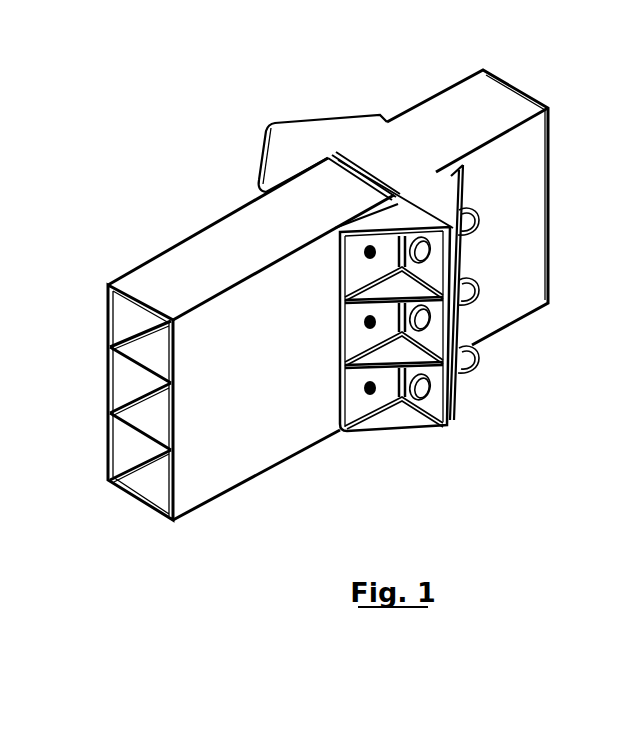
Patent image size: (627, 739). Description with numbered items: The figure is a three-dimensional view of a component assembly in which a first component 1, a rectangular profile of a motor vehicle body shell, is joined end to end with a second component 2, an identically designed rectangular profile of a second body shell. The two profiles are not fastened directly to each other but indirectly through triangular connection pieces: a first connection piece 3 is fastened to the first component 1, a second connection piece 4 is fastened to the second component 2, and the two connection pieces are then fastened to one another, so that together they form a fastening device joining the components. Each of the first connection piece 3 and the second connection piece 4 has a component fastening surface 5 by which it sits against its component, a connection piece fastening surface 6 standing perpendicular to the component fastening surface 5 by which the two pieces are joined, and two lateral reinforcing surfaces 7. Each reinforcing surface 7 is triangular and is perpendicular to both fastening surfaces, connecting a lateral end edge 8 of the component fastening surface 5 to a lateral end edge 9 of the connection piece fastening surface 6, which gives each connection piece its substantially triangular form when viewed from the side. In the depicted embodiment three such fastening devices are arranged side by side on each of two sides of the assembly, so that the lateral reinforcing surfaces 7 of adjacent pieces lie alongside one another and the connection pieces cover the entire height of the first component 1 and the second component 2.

The first component 1 is at (200, 260).
The second component 2 is at (445, 112).
The first connection piece 3 is at (282, 148).
The second connection piece 4 is at (328, 128).
The component fastening surface 5 is at (362, 268).
The connection piece fastening surface 6 is at (433, 268).
The lateral reinforcing surface 7 is at (395, 212).
The lateral end edge of the component fastening surface 8 is at (372, 410).
The lateral end edge of the connection piece fastening surface 9 is at (419, 413).